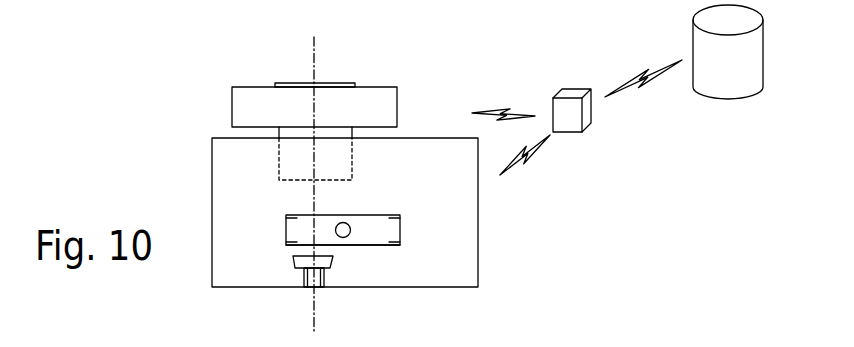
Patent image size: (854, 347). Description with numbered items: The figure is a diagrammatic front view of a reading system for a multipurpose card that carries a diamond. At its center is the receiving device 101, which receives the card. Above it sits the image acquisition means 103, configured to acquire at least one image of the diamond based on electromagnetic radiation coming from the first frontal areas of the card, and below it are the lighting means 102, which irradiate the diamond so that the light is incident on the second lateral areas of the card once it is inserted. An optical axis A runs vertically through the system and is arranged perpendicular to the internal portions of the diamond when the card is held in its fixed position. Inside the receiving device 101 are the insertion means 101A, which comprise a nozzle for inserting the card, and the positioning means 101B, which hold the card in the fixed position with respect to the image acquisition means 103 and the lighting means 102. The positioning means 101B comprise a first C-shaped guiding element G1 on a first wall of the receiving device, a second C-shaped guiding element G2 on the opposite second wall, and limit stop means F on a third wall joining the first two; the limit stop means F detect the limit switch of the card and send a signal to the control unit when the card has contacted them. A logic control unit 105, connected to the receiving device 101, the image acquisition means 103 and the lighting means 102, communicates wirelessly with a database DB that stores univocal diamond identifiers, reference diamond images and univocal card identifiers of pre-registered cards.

The optical axis A is at (317, 63).
The image acquisition means 103 is at (212, 111).
The receiving device 101 is at (272, 230).
The insertion means 101A is at (362, 245).
The positioning means 101B is at (539, 193).
The second C-shaped guiding element G2 is at (294, 218).
The limit stop means F is at (349, 226).
The first C-shaped guiding element G1 is at (397, 243).
The lighting means 102 is at (288, 284).
The logic control unit 105 is at (568, 123).
The database DB is at (742, 72).